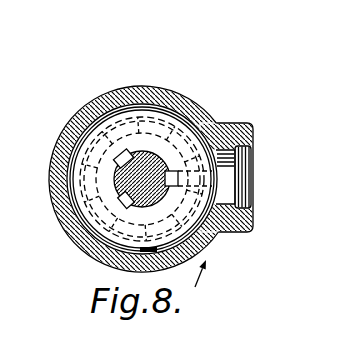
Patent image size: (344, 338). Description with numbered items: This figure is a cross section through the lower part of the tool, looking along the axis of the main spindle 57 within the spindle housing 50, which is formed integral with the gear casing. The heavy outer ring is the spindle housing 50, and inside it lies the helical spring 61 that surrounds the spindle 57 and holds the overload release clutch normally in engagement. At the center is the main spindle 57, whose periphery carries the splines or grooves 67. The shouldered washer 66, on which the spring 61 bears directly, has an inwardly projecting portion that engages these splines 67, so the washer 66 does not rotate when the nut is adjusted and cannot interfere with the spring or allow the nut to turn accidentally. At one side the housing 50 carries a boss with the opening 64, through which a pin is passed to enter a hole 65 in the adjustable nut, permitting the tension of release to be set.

The spindle housing 50 is at (137, 87).
The helical spring 61 is at (117, 120).
The splines or grooves 67 is at (130, 141).
The main spindle 57 is at (190, 143).
The shouldered washer 66 is at (212, 130).
The opening 64 is at (253, 181).
The hole 65 is at (94, 245).